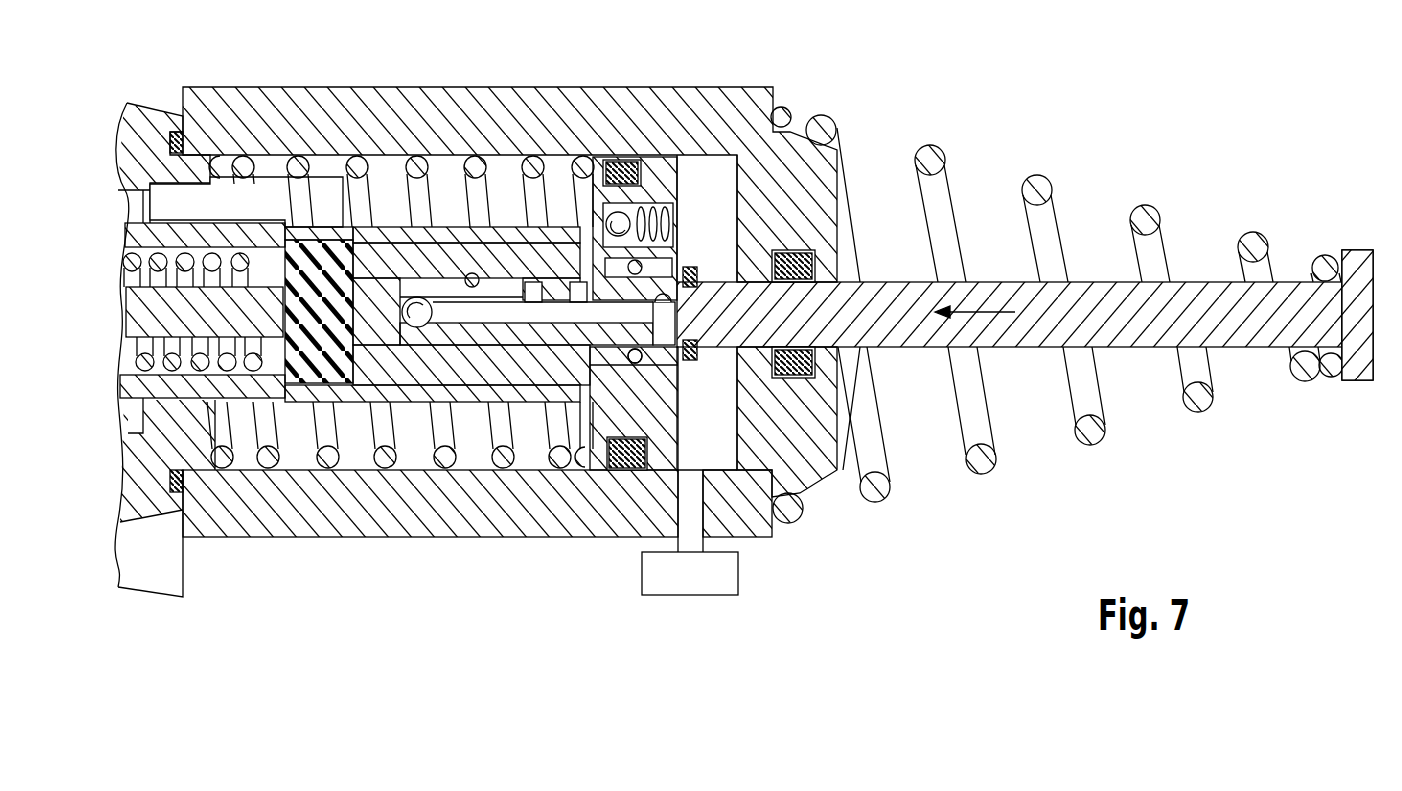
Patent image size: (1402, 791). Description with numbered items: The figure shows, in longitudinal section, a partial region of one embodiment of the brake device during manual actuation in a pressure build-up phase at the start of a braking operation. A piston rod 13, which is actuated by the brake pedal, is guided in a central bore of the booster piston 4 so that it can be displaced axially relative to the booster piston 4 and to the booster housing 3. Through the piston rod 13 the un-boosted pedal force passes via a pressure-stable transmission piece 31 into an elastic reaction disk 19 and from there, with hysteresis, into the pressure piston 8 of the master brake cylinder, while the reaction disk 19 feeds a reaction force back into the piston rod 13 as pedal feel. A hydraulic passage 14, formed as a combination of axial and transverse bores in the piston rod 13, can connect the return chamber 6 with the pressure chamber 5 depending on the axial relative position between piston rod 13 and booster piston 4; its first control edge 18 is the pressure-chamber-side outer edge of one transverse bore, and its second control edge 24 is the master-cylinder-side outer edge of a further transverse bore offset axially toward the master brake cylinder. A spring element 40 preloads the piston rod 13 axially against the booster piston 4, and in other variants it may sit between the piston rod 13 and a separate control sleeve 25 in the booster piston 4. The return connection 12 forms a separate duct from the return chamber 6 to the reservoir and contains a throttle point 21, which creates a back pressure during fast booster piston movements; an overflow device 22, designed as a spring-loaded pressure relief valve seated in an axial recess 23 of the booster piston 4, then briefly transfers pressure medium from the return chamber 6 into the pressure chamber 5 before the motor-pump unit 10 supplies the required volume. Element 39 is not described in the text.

The booster housing 3 is at (348, 113).
The booster piston 4 is at (607, 393).
The pressure chamber 5 is at (705, 187).
The return chamber 6 is at (390, 183).
The pressure piston 8 is at (207, 385).
The motor-pump unit 10 is at (690, 596).
The return connection 12 is at (262, 200).
The piston rod 13 is at (1235, 313).
The hydraulic passage 14 is at (675, 283).
The first control edge 18 is at (677, 355).
The reaction disk 19 is at (317, 320).
The throttle point 21 is at (148, 190).
The overflow device 22 is at (618, 170).
The axial recess 23 is at (657, 193).
The second control edge 24 is at (680, 268).
The control sleeve 25 is at (622, 360).
The transmission piece 31 is at (375, 313).
The spring coil 39 is at (483, 165).
The spring element 40 is at (1037, 190).